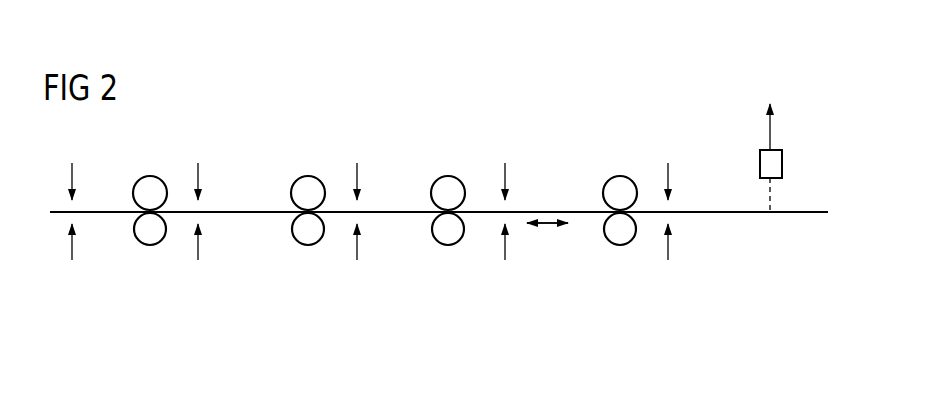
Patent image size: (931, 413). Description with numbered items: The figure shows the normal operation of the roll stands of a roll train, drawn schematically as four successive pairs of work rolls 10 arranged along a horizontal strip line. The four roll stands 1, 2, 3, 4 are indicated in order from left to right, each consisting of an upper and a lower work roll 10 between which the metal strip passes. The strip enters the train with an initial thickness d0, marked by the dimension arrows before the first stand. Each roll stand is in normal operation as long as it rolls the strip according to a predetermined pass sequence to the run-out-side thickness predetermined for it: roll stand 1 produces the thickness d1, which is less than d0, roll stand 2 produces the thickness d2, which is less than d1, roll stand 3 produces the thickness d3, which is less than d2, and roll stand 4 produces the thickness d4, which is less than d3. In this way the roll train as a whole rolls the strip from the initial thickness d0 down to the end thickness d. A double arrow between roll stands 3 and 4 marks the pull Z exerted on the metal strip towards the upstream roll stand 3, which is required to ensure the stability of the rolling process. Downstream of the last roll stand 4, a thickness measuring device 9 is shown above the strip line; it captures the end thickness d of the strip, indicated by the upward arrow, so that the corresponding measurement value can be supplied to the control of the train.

The roll stand 1 is at (128, 250).
The roll stand 2 is at (286, 250).
The roll stand 3 is at (427, 250).
The roll stand 4 is at (599, 250).
The work roll 10 is at (152, 176).
The thickness measuring device 9 is at (783, 165).
The end thickness d is at (772, 130).
The pull Z is at (545, 226).
The initial thickness d0 is at (57, 211).
The run-out-side thickness d1 is at (236, 211).
The run-out-side thickness d2 is at (393, 211).
The run-out-side thickness d3 is at (541, 211).
The run-out-side thickness d4 is at (705, 211).